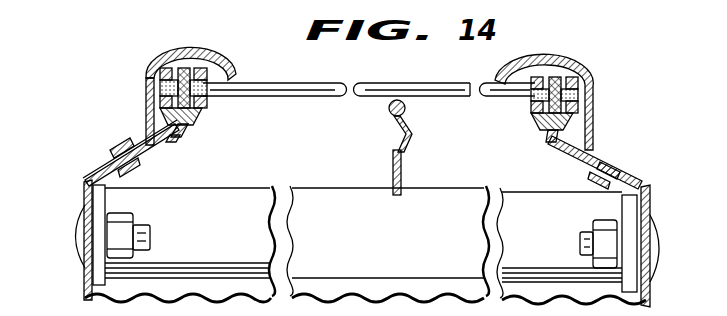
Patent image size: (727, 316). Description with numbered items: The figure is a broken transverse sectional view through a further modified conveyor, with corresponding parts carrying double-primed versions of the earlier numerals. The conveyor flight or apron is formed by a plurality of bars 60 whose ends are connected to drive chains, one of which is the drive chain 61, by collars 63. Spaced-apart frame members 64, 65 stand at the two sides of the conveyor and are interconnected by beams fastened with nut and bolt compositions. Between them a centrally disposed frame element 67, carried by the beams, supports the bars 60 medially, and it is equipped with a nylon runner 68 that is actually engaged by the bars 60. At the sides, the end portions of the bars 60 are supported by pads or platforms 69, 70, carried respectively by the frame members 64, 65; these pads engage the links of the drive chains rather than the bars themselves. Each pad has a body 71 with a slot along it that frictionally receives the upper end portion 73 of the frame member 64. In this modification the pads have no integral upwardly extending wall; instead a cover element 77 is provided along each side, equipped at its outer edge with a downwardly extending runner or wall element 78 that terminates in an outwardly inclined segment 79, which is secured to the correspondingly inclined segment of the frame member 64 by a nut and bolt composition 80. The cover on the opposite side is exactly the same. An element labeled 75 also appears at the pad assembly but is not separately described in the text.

The bars 60 is at (305, 85).
The drive chain 61 is at (183, 70).
The collars 63 is at (208, 73).
The frame member 64 is at (84, 198).
The frame member 65 is at (650, 203).
The frame element 67 is at (402, 170).
The nylon runner 68 is at (406, 110).
The pad 69 is at (183, 130).
The pad 70 is at (562, 126).
The body 71 is at (190, 123).
The upper end portion 73 is at (183, 138).
The retainer 75 is at (198, 111).
The cover element 77 is at (197, 52).
The runner or wall element 78 is at (145, 90).
The outwardly inclined segment 79 is at (106, 165).
The nut and bolt composition 80 is at (124, 150).